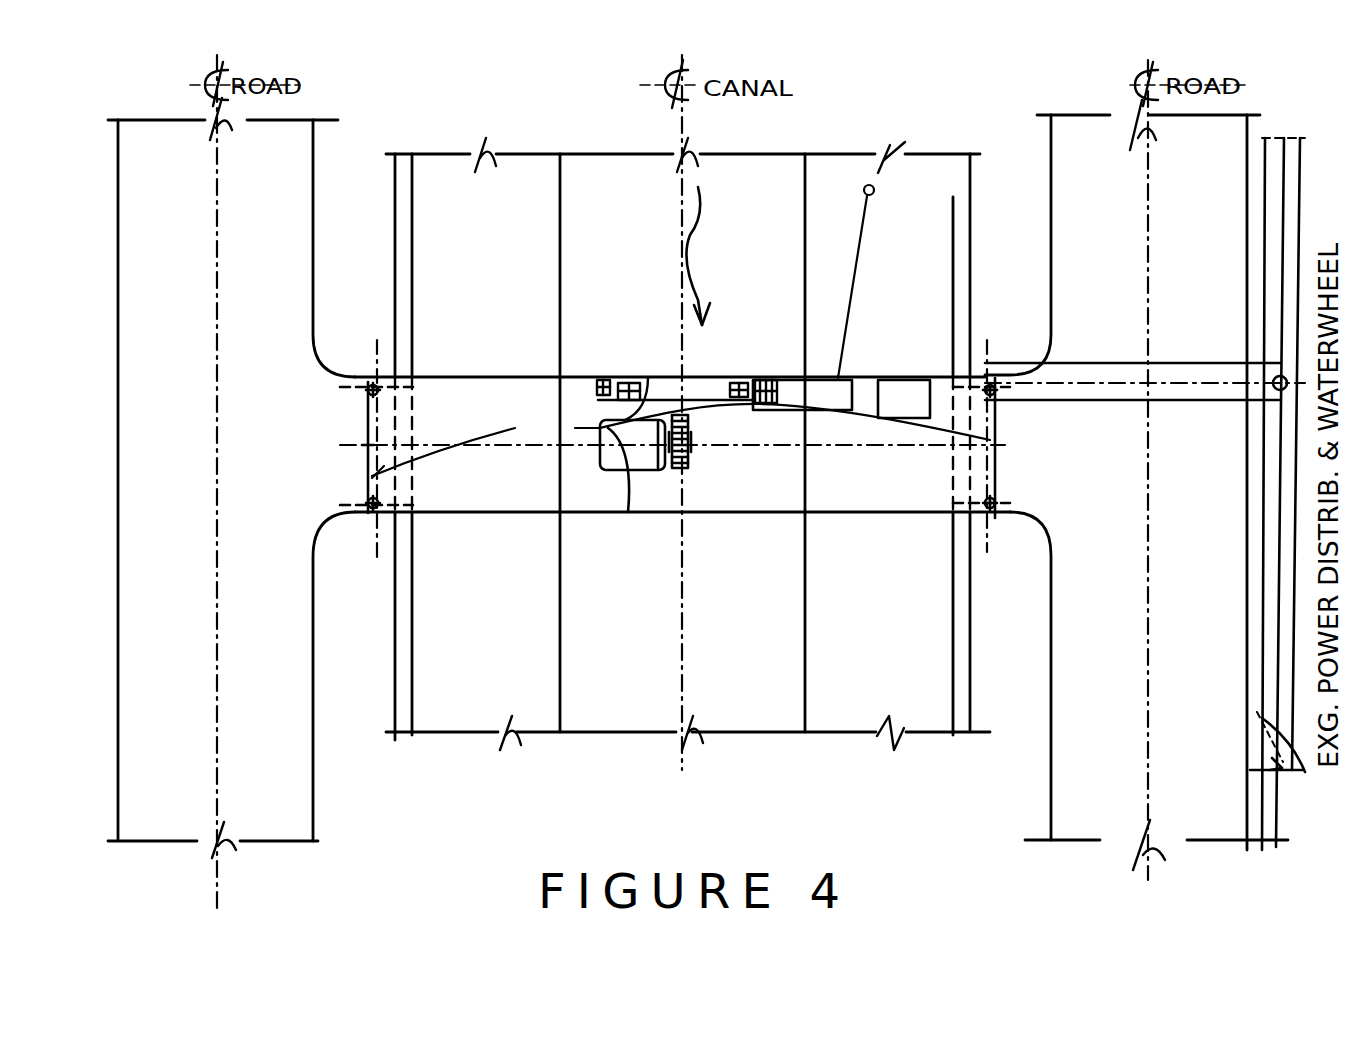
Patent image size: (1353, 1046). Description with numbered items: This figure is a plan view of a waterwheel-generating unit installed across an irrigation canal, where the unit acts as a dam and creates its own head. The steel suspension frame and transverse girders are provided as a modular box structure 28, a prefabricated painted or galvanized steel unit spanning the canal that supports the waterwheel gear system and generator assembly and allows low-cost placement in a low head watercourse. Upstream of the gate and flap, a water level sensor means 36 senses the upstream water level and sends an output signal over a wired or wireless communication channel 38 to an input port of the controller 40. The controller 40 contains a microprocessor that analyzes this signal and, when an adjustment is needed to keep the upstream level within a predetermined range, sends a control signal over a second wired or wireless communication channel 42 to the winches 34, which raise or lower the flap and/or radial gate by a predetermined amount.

The modular box structure 28 is at (681, 441).
The winches 34 is at (728, 389).
The water level sensor means 36 is at (876, 189).
The communication channel 38 is at (845, 320).
The controller 40 is at (841, 399).
The communication channel 42 is at (693, 397).